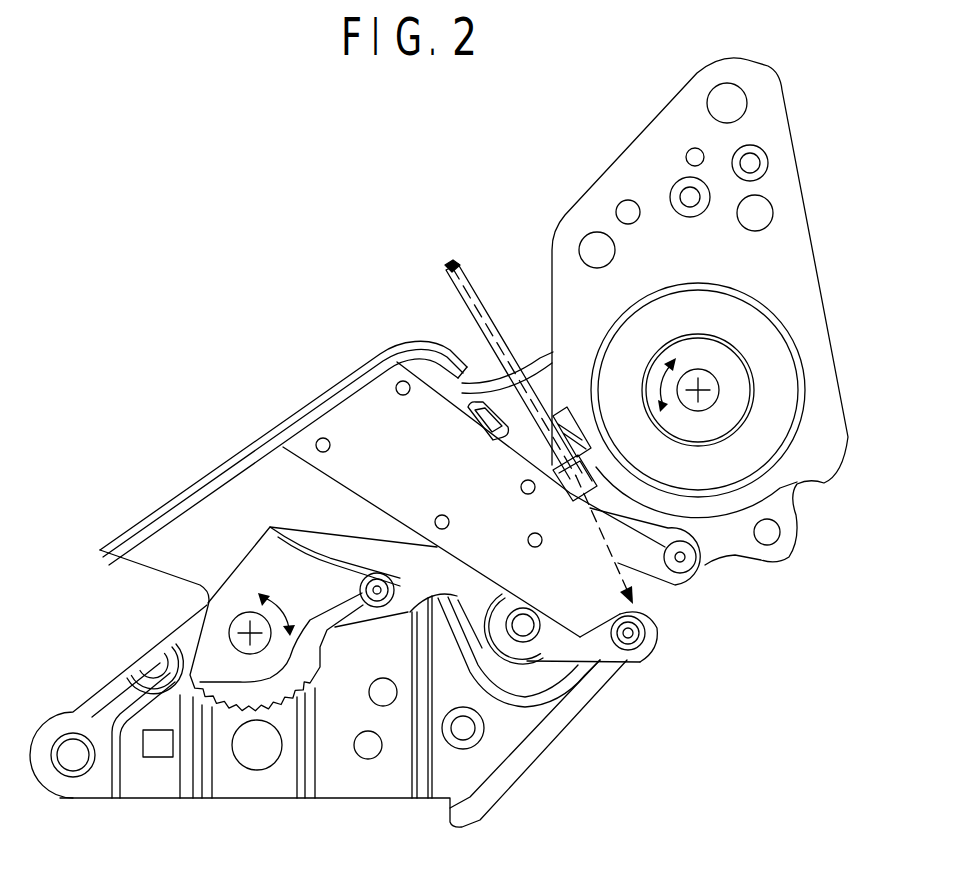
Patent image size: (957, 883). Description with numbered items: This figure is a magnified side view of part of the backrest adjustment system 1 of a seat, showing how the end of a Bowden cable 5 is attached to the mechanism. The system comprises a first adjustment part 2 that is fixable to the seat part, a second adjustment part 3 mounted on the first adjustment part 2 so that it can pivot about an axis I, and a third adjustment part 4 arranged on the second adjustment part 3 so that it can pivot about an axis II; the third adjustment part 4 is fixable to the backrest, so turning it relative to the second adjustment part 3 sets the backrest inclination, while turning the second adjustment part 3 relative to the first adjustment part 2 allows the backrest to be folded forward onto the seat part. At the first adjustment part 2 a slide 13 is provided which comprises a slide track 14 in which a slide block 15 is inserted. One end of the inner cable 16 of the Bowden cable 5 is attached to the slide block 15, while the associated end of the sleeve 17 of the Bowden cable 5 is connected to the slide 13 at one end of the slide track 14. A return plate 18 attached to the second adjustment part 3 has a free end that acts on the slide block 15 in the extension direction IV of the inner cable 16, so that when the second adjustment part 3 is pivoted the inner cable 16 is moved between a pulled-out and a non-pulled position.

The backrest adjustment system 1 is at (333, 296).
The first adjustment part 2 is at (363, 785).
The second adjustment part 3 is at (252, 497).
The third adjustment part 4 is at (795, 258).
The Bowden cable 5 is at (468, 287).
The slide 13 is at (585, 650).
The slide track 14 is at (603, 515).
The slide block 15 is at (640, 640).
The inner cable 16 is at (597, 557).
The sleeve 17 is at (557, 390).
The return plate 18 is at (357, 416).
The axis I is at (232, 630).
The axis II is at (698, 390).
The extension direction IV is at (632, 585).